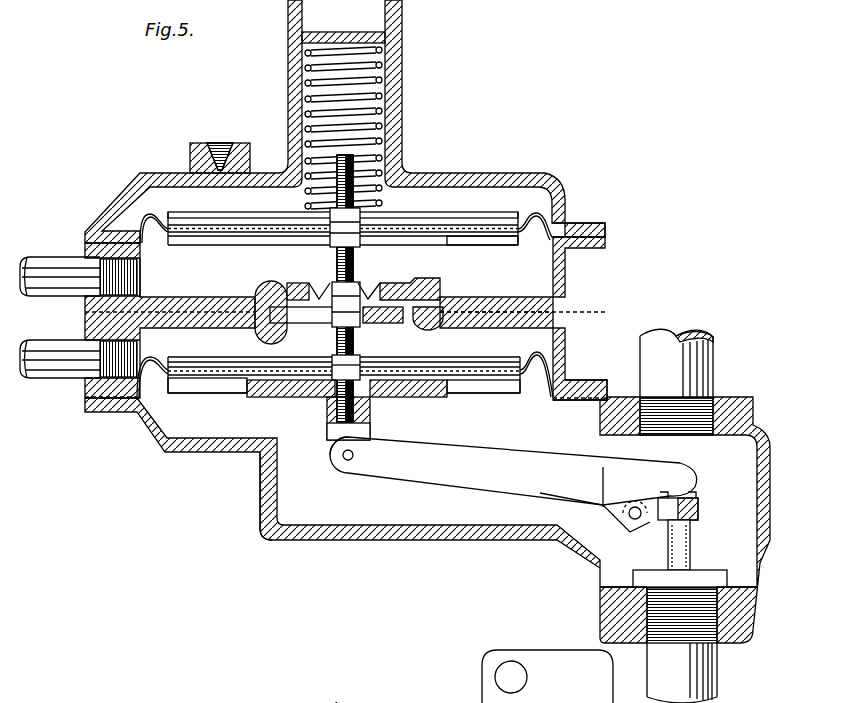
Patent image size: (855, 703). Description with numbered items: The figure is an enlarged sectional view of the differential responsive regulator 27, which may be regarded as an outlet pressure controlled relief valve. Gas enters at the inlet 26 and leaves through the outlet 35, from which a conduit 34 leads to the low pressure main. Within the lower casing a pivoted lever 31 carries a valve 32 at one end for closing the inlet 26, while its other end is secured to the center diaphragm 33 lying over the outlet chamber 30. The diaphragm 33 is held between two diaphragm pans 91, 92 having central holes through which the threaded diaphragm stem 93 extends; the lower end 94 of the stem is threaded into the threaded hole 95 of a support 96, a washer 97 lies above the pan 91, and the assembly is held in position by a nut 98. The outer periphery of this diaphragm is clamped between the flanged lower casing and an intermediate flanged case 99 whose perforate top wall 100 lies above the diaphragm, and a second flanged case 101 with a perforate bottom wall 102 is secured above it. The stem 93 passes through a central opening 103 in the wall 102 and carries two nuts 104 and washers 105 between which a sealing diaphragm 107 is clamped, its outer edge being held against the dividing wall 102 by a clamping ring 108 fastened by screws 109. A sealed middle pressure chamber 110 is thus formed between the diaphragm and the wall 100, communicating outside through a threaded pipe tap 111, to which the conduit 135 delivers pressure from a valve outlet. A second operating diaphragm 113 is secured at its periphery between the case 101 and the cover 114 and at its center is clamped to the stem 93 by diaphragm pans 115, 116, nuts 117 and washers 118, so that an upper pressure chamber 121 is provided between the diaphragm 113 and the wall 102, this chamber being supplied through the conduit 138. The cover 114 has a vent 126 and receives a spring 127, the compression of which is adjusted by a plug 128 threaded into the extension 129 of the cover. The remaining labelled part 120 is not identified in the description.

The inlet 26 is at (648, 600).
The regulator 27 is at (262, 479).
The outlet chamber 30 is at (177, 413).
The pivoted lever 31 is at (457, 474).
The valve 32 is at (697, 504).
The diaphragm 33 is at (537, 384).
The conduit 34 is at (708, 683).
The outlet 35 is at (707, 397).
The diaphragm pan 91 is at (520, 362).
The diaphragm pan 92 is at (490, 389).
The threaded diaphragm stem 93 is at (354, 284).
The lower end of stem 94 is at (337, 406).
The threaded hole 95 is at (330, 438).
The support 96 is at (381, 398).
The washer 97 is at (390, 367).
The nut 98 is at (335, 356).
The intermediate flanged case 99 is at (566, 346).
The perforate top wall 100 is at (504, 328).
The second flanged case 101 is at (566, 271).
The perforate bottom wall 102 is at (232, 300).
The central opening 103 is at (441, 300).
The nuts 104 is at (336, 285).
The washers 105 is at (372, 290).
The sealing diaphragm 107 is at (298, 284).
The clamping ring 108 is at (253, 288).
The screws 109 is at (425, 280).
The sealed pressure chamber 110 is at (220, 356).
The threaded pipe tap 111 is at (100, 343).
The second operating diaphragm 113 is at (560, 204).
The cover 114 is at (519, 163).
The diaphragm pan 115 is at (505, 246).
The diaphragm pan 116 is at (509, 225).
The nuts 117 is at (376, 213).
The washers 118 is at (318, 220).
The pipe 120 is at (97, 263).
The second pressure chamber 121 is at (180, 278).
The vent 126 is at (217, 178).
The spring 127 is at (298, 90).
The plug 128 is at (372, 33).
The extension 129 is at (403, 91).
The conduit 135 is at (62, 364).
The conduit 138 is at (43, 257).